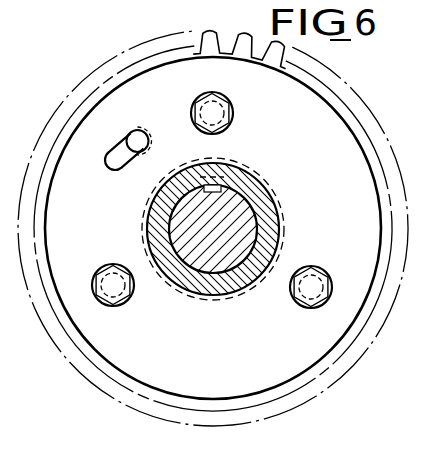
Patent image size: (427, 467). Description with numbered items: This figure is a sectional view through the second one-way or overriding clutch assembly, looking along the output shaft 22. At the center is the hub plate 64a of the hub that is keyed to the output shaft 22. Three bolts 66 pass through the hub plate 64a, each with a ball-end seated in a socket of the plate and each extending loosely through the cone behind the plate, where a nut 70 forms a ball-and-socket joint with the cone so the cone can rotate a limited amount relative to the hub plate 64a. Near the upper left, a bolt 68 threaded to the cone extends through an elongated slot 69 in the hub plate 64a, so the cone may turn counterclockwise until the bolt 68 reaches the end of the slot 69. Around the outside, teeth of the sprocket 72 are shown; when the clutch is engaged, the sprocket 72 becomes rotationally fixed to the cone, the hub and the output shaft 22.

The output shaft 22 is at (241, 224).
The hub plate 64a is at (341, 175).
The bolt 66 is at (234, 121).
The bolt 68 is at (139, 131).
The elongated slot 69 is at (116, 145).
The nut 70 is at (205, 96).
The sprocket 72 is at (204, 38).